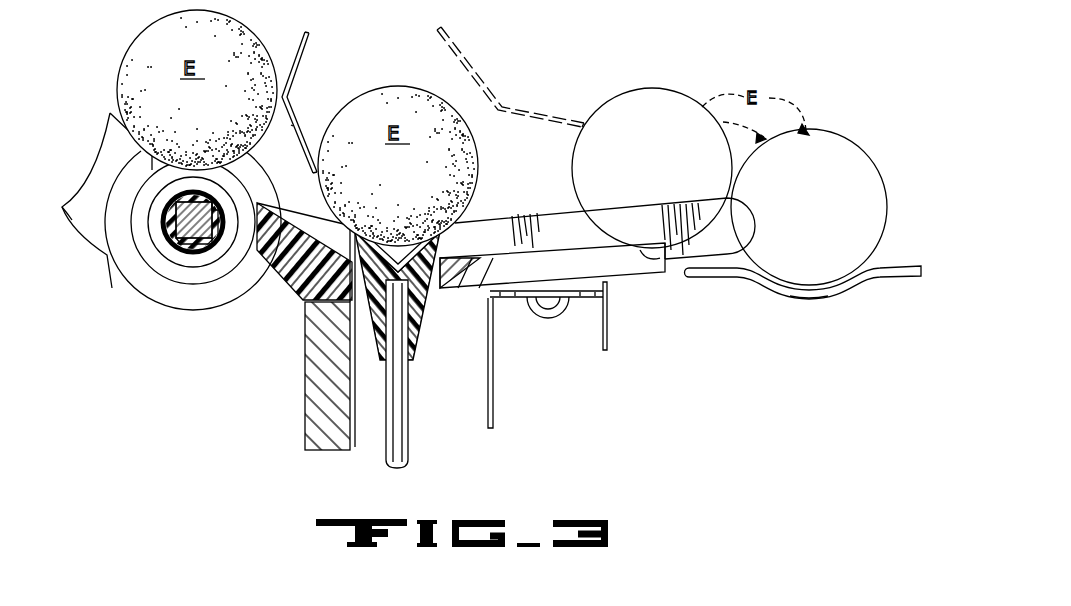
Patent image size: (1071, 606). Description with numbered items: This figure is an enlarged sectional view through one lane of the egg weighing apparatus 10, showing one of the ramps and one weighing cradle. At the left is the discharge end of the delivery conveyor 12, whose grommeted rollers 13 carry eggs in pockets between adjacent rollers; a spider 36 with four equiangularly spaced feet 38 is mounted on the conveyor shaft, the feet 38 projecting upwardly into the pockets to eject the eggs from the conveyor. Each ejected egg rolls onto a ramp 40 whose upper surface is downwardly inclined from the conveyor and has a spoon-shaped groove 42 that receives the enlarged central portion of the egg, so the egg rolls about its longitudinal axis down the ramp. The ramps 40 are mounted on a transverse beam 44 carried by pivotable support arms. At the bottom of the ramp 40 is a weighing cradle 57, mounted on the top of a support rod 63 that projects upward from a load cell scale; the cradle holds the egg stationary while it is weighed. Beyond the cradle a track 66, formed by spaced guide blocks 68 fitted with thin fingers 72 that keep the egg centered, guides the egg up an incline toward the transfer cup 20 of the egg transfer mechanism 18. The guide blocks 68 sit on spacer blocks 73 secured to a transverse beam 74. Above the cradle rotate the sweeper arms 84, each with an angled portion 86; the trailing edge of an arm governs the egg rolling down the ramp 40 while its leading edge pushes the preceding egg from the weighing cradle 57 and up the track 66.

The egg weighing apparatus 10 is at (432, 407).
The delivery conveyor 12 is at (150, 298).
The grommeted rollers 13 is at (195, 293).
The egg transfer mechanism 18 is at (752, 292).
The transfer cup 20 is at (821, 294).
The spider 36 is at (96, 275).
The feet 38 is at (110, 141).
The ramp 40 is at (292, 283).
The spoon-shaped groove 42 is at (299, 223).
The transverse beam 44 is at (312, 338).
The weighing cradle 57 is at (416, 331).
The support rod 63 is at (392, 447).
The track 66 is at (551, 206).
The guide block 68 is at (482, 285).
The finger 72 is at (623, 213).
The spacer block 73 is at (604, 286).
The transverse beam 74 is at (495, 393).
The sweeper arm 84 is at (442, 47).
The angled portion 86 is at (292, 127).